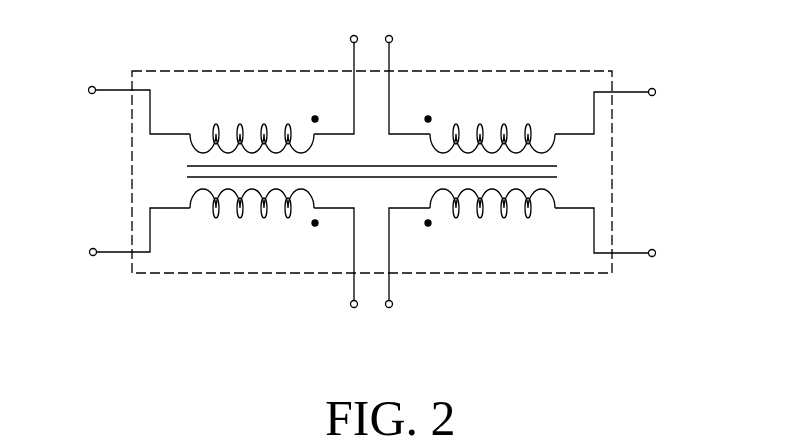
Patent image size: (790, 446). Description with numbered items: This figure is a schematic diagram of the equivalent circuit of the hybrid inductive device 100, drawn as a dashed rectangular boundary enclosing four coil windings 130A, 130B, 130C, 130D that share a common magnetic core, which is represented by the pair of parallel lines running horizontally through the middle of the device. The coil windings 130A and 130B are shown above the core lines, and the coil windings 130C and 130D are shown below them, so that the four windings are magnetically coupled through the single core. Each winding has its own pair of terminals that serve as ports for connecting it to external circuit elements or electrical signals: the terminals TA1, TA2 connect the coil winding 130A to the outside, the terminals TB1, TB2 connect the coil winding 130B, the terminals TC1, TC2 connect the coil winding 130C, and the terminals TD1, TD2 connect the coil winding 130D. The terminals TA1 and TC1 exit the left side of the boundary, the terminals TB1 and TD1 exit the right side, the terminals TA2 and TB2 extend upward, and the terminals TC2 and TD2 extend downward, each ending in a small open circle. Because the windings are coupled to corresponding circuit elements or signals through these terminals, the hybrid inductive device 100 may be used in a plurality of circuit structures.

The hybrid inductive device 100 is at (160, 70).
The coil winding 130A is at (242, 125).
The coil winding 130B is at (505, 125).
The coil winding 130C is at (241, 218).
The coil winding 130D is at (504, 218).
The terminal TA1 is at (111, 104).
The terminal TA2 is at (336, 70).
The terminal TB1 is at (634, 105).
The terminal TB2 is at (409, 70).
The terminal TC1 is at (111, 238).
The terminal TC2 is at (336, 274).
The terminal TD1 is at (635, 238).
The terminal TD2 is at (409, 274).